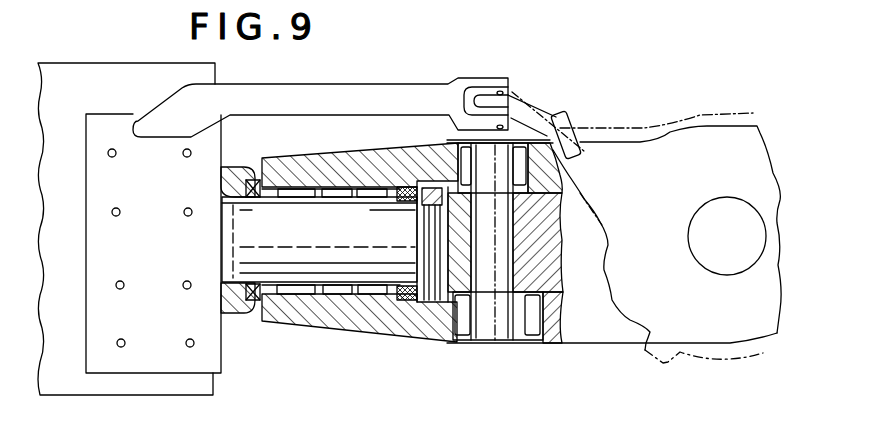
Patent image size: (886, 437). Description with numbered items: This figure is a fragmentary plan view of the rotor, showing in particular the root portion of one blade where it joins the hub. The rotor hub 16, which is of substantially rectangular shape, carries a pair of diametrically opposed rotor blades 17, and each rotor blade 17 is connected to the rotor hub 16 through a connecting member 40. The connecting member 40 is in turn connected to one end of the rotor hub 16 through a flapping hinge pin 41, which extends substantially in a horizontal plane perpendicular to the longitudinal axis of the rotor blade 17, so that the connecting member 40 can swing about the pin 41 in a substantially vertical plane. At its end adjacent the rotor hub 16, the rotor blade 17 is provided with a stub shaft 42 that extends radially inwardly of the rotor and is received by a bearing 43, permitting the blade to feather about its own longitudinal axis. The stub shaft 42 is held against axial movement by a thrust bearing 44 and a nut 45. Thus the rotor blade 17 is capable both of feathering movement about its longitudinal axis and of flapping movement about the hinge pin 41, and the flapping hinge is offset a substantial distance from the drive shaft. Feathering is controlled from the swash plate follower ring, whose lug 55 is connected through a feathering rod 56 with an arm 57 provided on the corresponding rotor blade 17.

The rotor hub 16 is at (622, 162).
The rotor blade 17 is at (97, 70).
The connecting member 40 is at (308, 170).
The flapping hinge pin 41 is at (498, 345).
The stub shaft 42 is at (337, 260).
The bearing 43 is at (374, 298).
The thrust bearing 44 is at (413, 303).
The nut 45 is at (438, 303).
The lug 55 is at (568, 112).
The feathering rod 56 is at (522, 102).
The arm 57 is at (318, 93).